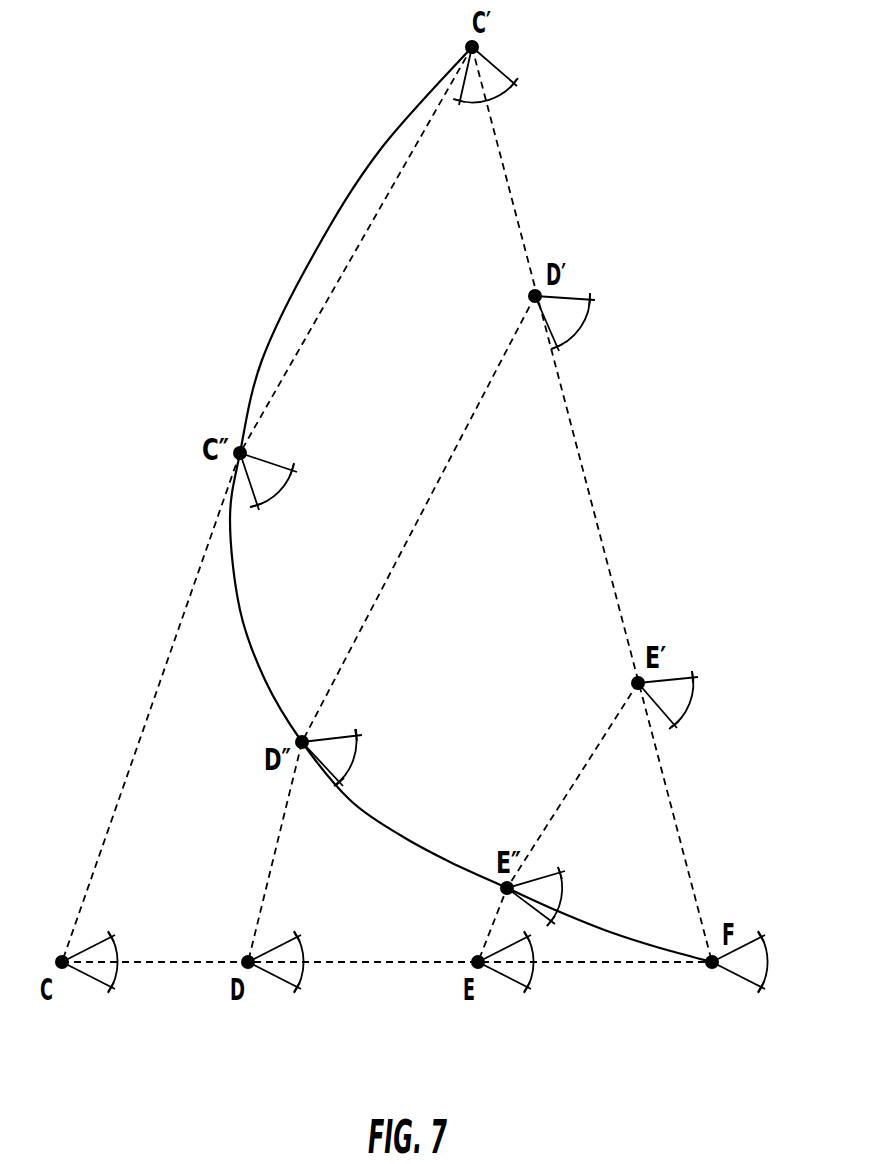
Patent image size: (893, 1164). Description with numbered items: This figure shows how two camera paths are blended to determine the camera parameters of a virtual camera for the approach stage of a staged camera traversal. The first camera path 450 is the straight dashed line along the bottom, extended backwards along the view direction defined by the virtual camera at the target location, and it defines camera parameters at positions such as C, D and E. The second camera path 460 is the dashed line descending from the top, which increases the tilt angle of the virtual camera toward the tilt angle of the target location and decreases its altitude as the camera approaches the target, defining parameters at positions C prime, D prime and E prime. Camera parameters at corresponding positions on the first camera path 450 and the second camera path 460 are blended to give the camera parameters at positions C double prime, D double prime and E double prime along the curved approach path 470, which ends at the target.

The first camera path 450 is at (357, 962).
The second camera path 460 is at (519, 228).
The approach path 470 is at (314, 251).